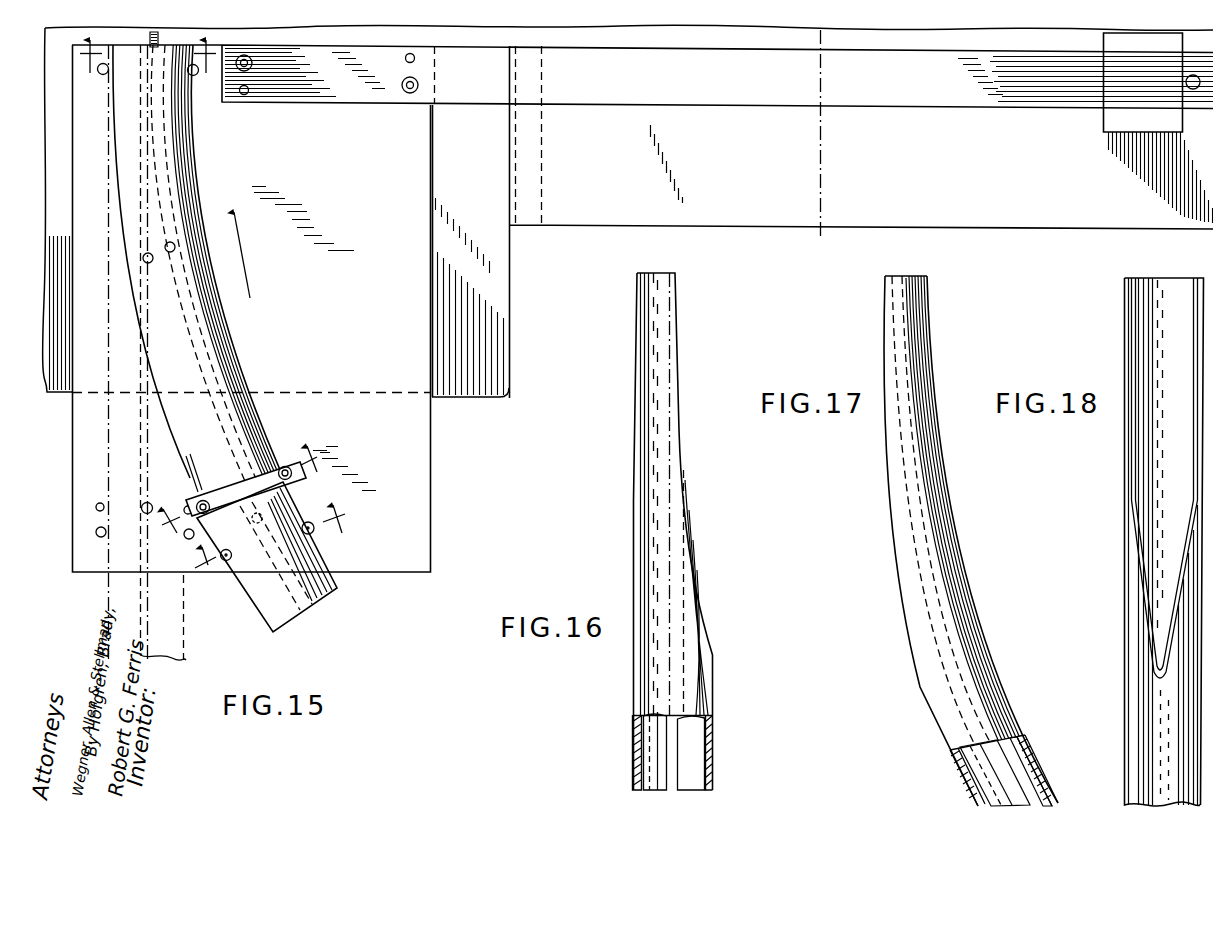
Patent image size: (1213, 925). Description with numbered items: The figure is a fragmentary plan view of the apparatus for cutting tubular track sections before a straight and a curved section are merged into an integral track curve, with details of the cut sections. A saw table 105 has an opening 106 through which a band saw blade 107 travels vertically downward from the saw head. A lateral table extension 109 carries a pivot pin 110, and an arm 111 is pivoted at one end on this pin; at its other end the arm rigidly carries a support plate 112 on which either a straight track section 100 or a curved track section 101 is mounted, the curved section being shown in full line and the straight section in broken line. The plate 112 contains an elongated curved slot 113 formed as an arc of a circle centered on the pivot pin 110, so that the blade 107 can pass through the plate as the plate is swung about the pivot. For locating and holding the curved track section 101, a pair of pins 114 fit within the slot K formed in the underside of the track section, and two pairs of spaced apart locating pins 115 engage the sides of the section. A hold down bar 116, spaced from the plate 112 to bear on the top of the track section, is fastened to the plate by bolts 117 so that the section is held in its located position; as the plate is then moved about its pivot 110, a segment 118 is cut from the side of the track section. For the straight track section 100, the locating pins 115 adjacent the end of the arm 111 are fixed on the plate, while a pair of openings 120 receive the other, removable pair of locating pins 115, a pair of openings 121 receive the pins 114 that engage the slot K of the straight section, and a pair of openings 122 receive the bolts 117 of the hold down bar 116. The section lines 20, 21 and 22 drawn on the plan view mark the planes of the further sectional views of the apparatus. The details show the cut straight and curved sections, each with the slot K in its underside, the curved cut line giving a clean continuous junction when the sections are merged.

In FIG. 15, the section line 20- 20 is at (274, 552).
In FIG. 15, the section line 21- 21 is at (144, 68).
In FIG. 15, the section line 22- 22 is at (254, 495).
In FIG. 15, the straight track section 100 is at (177, 352).
In FIG. 16, the straight track section 100 is at (653, 531).
In FIG. 15, the curved track section 101 is at (287, 617).
In FIG. 17, the curved track section 101 is at (972, 541).
In FIG. 18, the curved track section 101 is at (1122, 622).
In FIG. 15, the saw table 105 is at (500, 302).
In FIG. 15, the opening 106 is at (150, 38).
In FIG. 15, the band saw blade 107 is at (158, 36).
In FIG. 15, the lateral table extension 109 is at (961, 222).
In FIG. 15, the pivot pin 110 is at (1188, 88).
In FIG. 15, the arm 111 is at (895, 95).
In FIG. 15, the plate 112 is at (430, 478).
In FIG. 15, the elongated curved slot 113 is at (192, 478).
In FIG. 15, the pins 114 is at (176, 240).
In FIG. 15, the locating pins 115 is at (188, 74).
In FIG. 15, the hold down bar 116 is at (286, 473).
In FIG. 15, the bolts 117 is at (210, 510).
In FIG. 15, the segment 118 is at (128, 205).
In FIG. 15, the openings 120 is at (96, 533).
In FIG. 15, the openings 121 is at (143, 262).
In FIG. 15, the openings 122 is at (96, 508).
In FIG. 16, the slot K is at (672, 742).
In FIG. 17, the slot K is at (993, 762).